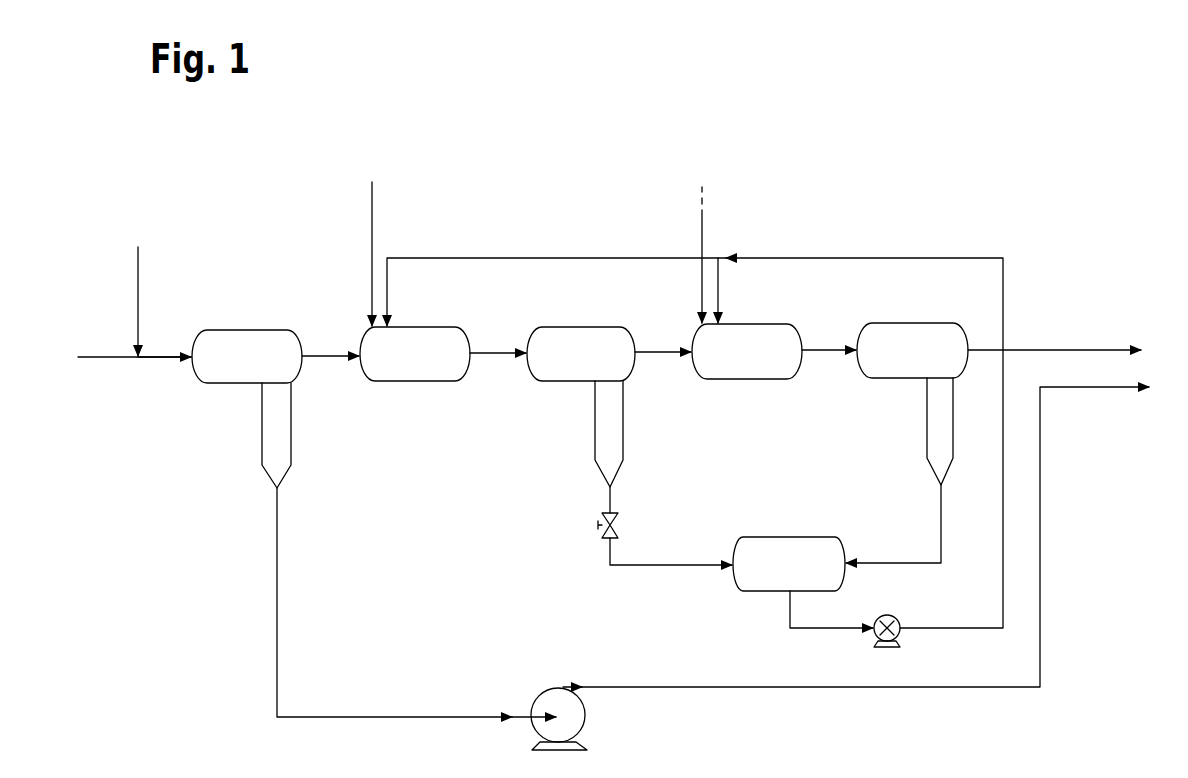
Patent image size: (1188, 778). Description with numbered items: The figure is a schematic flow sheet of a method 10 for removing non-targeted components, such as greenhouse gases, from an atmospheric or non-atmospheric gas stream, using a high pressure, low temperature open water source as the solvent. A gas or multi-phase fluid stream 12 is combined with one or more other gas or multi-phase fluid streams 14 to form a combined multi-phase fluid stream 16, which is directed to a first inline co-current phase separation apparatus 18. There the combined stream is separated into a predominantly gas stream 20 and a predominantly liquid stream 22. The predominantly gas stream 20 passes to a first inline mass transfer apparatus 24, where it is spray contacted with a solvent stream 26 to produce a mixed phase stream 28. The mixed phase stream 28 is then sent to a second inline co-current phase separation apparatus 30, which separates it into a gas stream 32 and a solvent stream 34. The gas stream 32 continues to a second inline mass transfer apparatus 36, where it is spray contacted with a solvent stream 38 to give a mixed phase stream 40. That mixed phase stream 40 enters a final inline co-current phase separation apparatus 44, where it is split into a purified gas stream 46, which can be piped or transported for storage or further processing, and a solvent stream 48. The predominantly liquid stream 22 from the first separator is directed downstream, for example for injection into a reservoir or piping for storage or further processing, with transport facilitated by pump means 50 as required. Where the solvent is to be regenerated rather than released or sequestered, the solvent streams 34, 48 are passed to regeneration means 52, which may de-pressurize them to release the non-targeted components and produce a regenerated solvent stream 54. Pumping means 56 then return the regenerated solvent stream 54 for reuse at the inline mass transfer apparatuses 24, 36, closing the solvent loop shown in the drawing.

The method 10 is at (988, 203).
The gas or multi-phase fluid stream 12 is at (103, 357).
The other gas or multi-phase fluid streams 14 is at (142, 305).
The combined multi-phase fluid stream 16 is at (166, 357).
The inline co-current phase separation apparatus 18 is at (226, 345).
The predominantly gas stream 20 is at (331, 356).
The predominantly liquid stream 22 is at (289, 560).
The inline mass transfer apparatus 24 is at (440, 335).
The solvent stream 26 is at (367, 240).
The mixed phase stream 28 is at (489, 353).
The inline co-current phase separation apparatus 30 is at (597, 341).
The gas stream 32 is at (654, 352).
The solvent stream 34 is at (630, 445).
The inline mass transfer apparatus 36 is at (768, 331).
The solvent stream 38 is at (698, 237).
The mixed phase stream 40 is at (827, 350).
The inline co-current phase separation apparatus 44 is at (942, 331).
The purified gas stream 46 is at (1036, 348).
The solvent stream 48 is at (944, 510).
The pump means 50 is at (587, 712).
The regeneration means 52 is at (808, 547).
The regenerated solvent stream 54 is at (814, 628).
The pumping means 56 is at (901, 624).